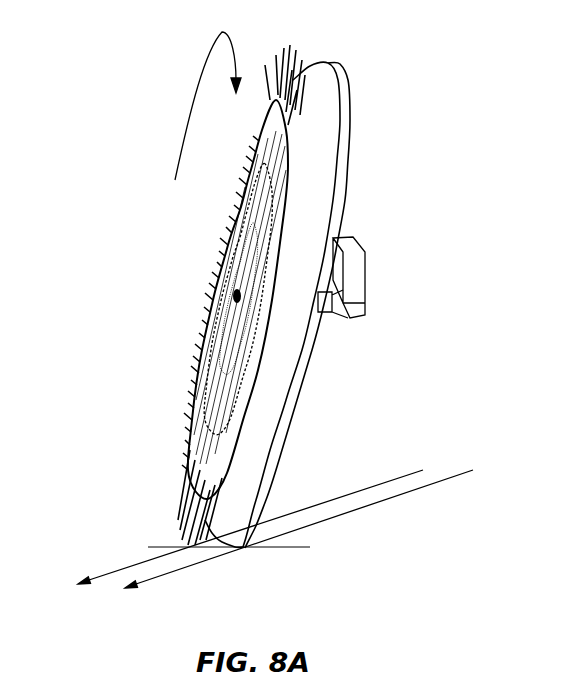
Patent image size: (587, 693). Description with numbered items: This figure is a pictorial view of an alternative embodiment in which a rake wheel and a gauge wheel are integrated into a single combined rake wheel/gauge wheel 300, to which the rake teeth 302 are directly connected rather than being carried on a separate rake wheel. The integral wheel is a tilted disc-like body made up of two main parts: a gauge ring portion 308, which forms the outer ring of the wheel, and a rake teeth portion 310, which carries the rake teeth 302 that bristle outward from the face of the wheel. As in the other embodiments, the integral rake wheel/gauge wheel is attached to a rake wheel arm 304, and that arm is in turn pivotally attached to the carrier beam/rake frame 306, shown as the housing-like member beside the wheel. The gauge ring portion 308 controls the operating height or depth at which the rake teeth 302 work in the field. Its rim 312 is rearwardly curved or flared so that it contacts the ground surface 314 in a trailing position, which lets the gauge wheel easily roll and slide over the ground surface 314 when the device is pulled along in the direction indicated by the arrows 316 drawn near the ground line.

The combined rake wheel/gauge wheel 300 is at (395, 175).
The rake teeth 302 is at (293, 55).
The rake wheel arm 304 is at (320, 313).
The carrier beam/rake frame 306 is at (350, 248).
The gauge ring portion 308 is at (347, 127).
The rake teeth portion 310 is at (190, 428).
The rearwardly curved or flared rim 312 is at (276, 378).
The ground surface 314 is at (384, 512).
The arrows 316 is at (190, 567).